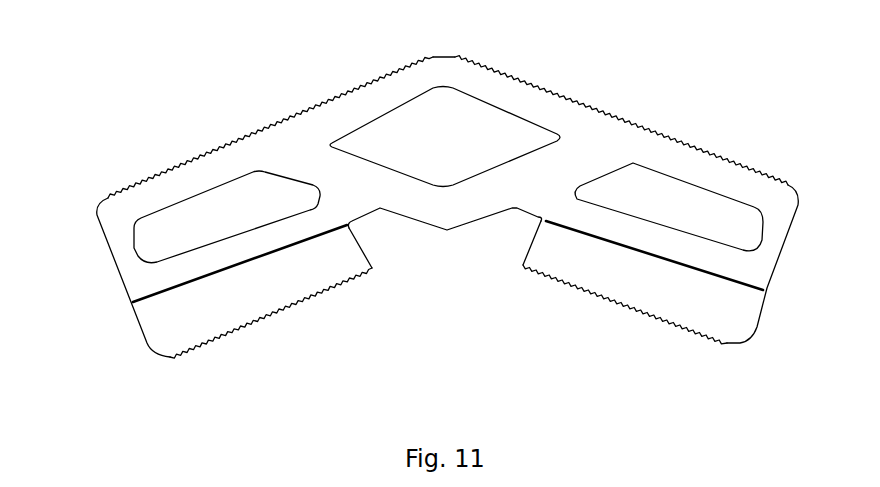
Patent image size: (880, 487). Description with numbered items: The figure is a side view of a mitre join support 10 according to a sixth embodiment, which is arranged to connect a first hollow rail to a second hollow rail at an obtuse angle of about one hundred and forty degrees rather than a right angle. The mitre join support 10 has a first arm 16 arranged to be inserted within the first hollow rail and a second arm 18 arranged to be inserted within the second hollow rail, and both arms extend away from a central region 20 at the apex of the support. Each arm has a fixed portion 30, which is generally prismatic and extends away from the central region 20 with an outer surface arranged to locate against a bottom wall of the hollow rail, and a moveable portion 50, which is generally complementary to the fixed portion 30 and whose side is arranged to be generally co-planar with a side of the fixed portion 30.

The mitre join support 10 is at (285, 135).
The first arm 16 is at (652, 145).
The second arm 18 is at (202, 167).
The central region 20 is at (470, 77).
The fixed portion 30 is at (120, 128).
The moveable portion 50 is at (245, 310).